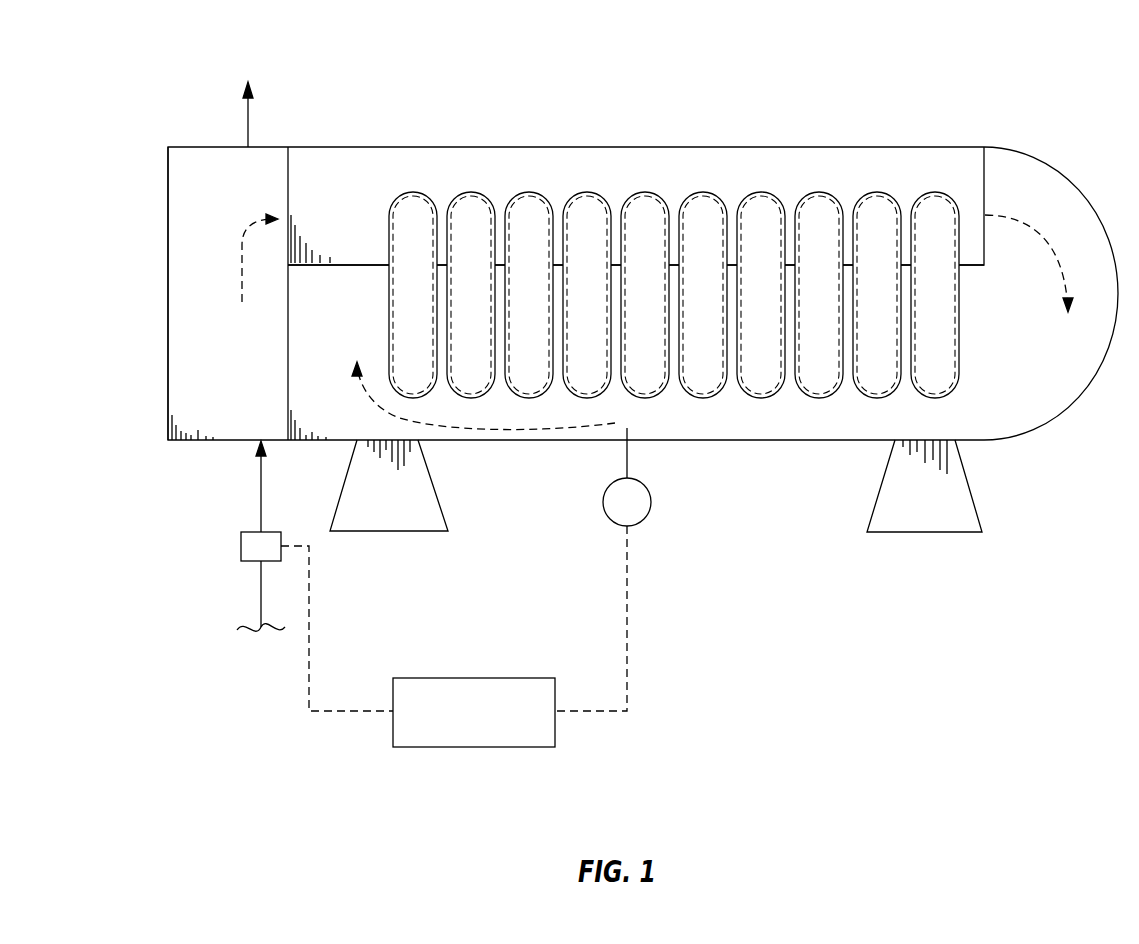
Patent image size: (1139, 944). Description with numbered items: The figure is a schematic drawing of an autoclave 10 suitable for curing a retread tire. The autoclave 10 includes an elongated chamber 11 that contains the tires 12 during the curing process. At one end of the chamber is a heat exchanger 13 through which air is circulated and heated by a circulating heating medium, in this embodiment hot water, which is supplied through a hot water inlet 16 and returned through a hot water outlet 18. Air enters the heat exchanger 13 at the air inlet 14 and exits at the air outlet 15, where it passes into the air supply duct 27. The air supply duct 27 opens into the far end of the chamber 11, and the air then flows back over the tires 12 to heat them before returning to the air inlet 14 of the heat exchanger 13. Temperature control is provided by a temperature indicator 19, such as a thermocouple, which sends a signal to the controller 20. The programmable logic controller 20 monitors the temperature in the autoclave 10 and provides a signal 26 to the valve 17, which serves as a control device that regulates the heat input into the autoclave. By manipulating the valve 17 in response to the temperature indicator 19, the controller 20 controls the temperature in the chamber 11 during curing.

The autoclave 10 is at (166, 60).
The elongated chamber 11 is at (585, 148).
The tires 12 is at (870, 194).
The heat exchanger 13 is at (182, 441).
The air inlet 14 is at (290, 343).
The air outlet 15 is at (290, 190).
The hot water inlet 16 is at (261, 502).
The valve 17 is at (241, 546).
The hot water outlet 18 is at (248, 126).
The temperature indicator 19 is at (651, 502).
The controller 20 is at (475, 748).
The signal 26 is at (310, 673).
The air supply duct 27 is at (347, 212).